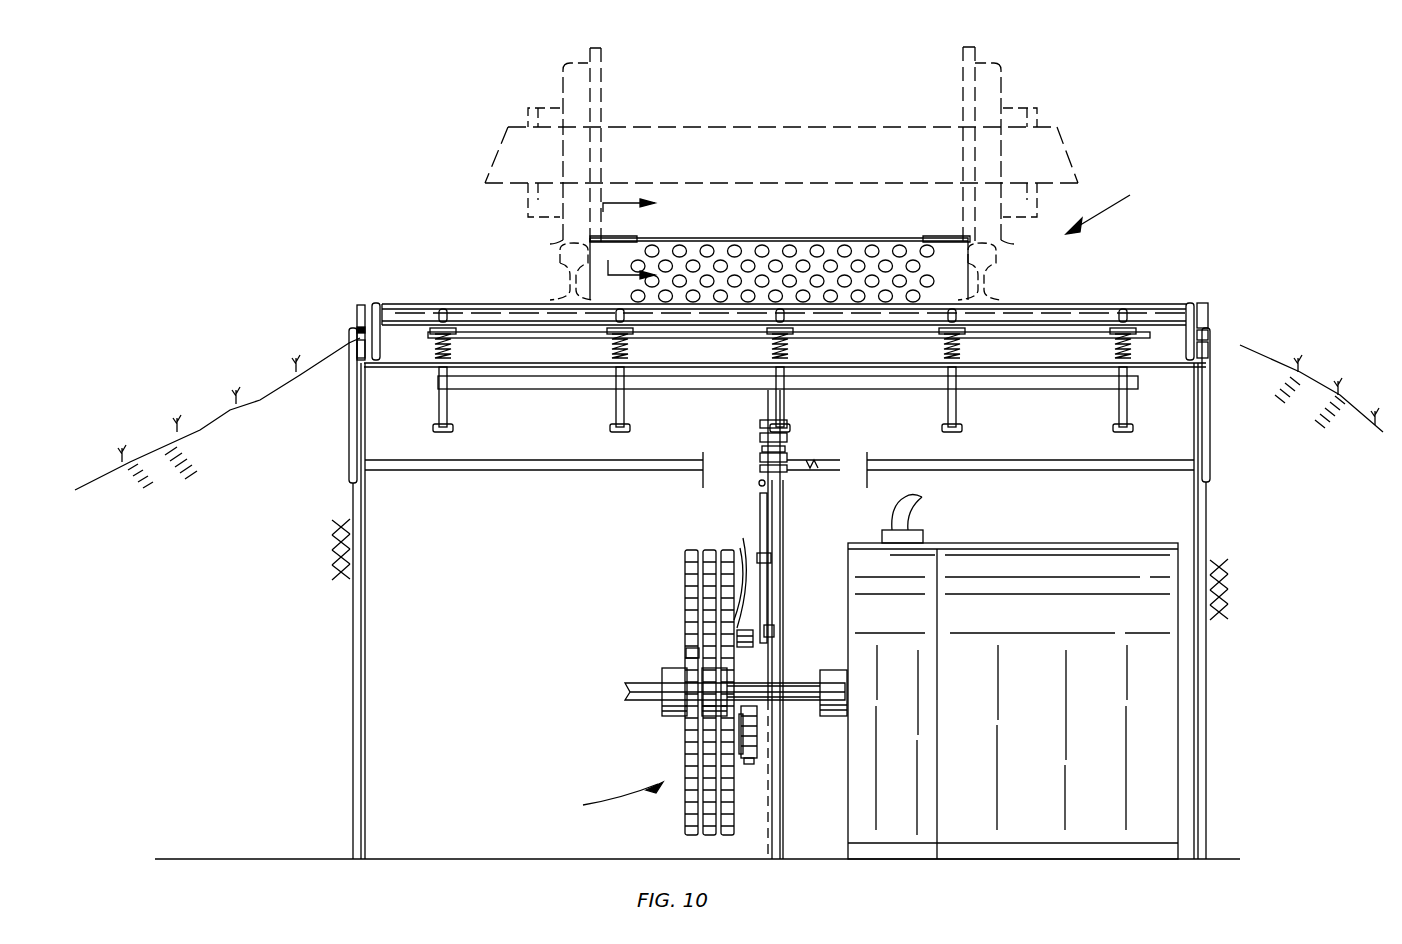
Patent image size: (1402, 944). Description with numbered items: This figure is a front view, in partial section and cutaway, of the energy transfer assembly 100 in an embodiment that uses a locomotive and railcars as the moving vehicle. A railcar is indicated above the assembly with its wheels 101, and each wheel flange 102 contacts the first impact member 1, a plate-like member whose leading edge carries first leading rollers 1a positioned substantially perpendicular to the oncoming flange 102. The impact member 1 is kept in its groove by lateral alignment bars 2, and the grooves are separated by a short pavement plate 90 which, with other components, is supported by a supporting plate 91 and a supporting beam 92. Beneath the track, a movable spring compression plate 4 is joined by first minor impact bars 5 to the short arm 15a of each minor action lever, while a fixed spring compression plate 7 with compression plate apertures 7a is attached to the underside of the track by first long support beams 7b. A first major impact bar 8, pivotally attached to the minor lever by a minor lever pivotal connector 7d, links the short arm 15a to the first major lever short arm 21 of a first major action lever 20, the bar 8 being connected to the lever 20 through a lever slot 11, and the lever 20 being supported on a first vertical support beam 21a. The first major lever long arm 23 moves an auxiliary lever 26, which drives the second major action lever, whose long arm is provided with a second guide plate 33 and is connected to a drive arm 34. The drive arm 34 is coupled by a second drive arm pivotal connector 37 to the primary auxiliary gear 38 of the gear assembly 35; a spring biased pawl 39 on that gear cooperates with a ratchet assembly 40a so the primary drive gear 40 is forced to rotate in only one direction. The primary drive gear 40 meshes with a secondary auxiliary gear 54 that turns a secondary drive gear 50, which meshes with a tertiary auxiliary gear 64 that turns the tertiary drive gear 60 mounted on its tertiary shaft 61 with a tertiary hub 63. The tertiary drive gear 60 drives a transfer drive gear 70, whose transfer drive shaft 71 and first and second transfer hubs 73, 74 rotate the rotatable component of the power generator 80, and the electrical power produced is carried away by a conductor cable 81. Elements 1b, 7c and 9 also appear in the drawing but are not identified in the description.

The first impact member 1 is at (852, 238).
The first leading roller 1a is at (608, 241).
The perforation holes 1b is at (757, 250).
The lateral alignment bar 2 is at (360, 330).
The movable spring compression plate 4 is at (535, 332).
The first minor impact bar 5 is at (452, 343).
The fixed spring compression plate 7 is at (425, 365).
The compression plate aperture 7a is at (440, 372).
The first long support beam 7b is at (350, 433).
The frame wall 7c is at (349, 380).
The minor lever pivotal connector 7d is at (433, 428).
The first major impact bar 8 is at (787, 417).
The lower bar 9 is at (545, 392).
The lever slot 11 is at (644, 241).
The minor lever short arm 15a is at (610, 428).
The first major action lever 20 is at (762, 435).
The first major lever short arm 21 is at (773, 437).
The first vertical support beam 21a is at (780, 542).
The first major lever long arm 23 is at (773, 449).
The auxiliary lever 26 is at (788, 453).
The second guide plate 33 is at (765, 517).
The drive arm 34 is at (772, 528).
The gear assembly 35 is at (587, 801).
The second drive arm pivotal connector 37 is at (772, 633).
The primary auxiliary gear 38 is at (753, 758).
The spring biased pawl 39 is at (735, 571).
The primary drive gear 40 is at (727, 547).
The ratchet assembly 40a is at (750, 727).
The secondary drive gear 50 is at (708, 548).
The secondary auxiliary gear 54 is at (730, 643).
The tertiary drive gear 60 is at (690, 551).
The tertiary shaft 61 is at (640, 707).
The tertiary hub 63 is at (673, 718).
The tertiary auxiliary gear 64 is at (693, 640).
The transfer drive gear 70 is at (692, 653).
The transfer drive shaft 71 is at (792, 673).
The first transfer hub 73 is at (720, 710).
The second transfer hub 74 is at (835, 718).
The power generator 80 is at (1053, 543).
The conductor cable 81 is at (898, 499).
The short pavement plate 90 is at (362, 303).
The supporting plate 91 is at (357, 323).
The supporting beam 92 is at (365, 345).
The energy transfer assembly 100 is at (1123, 204).
The wheel 101 is at (560, 98).
The flange 102 is at (605, 73).